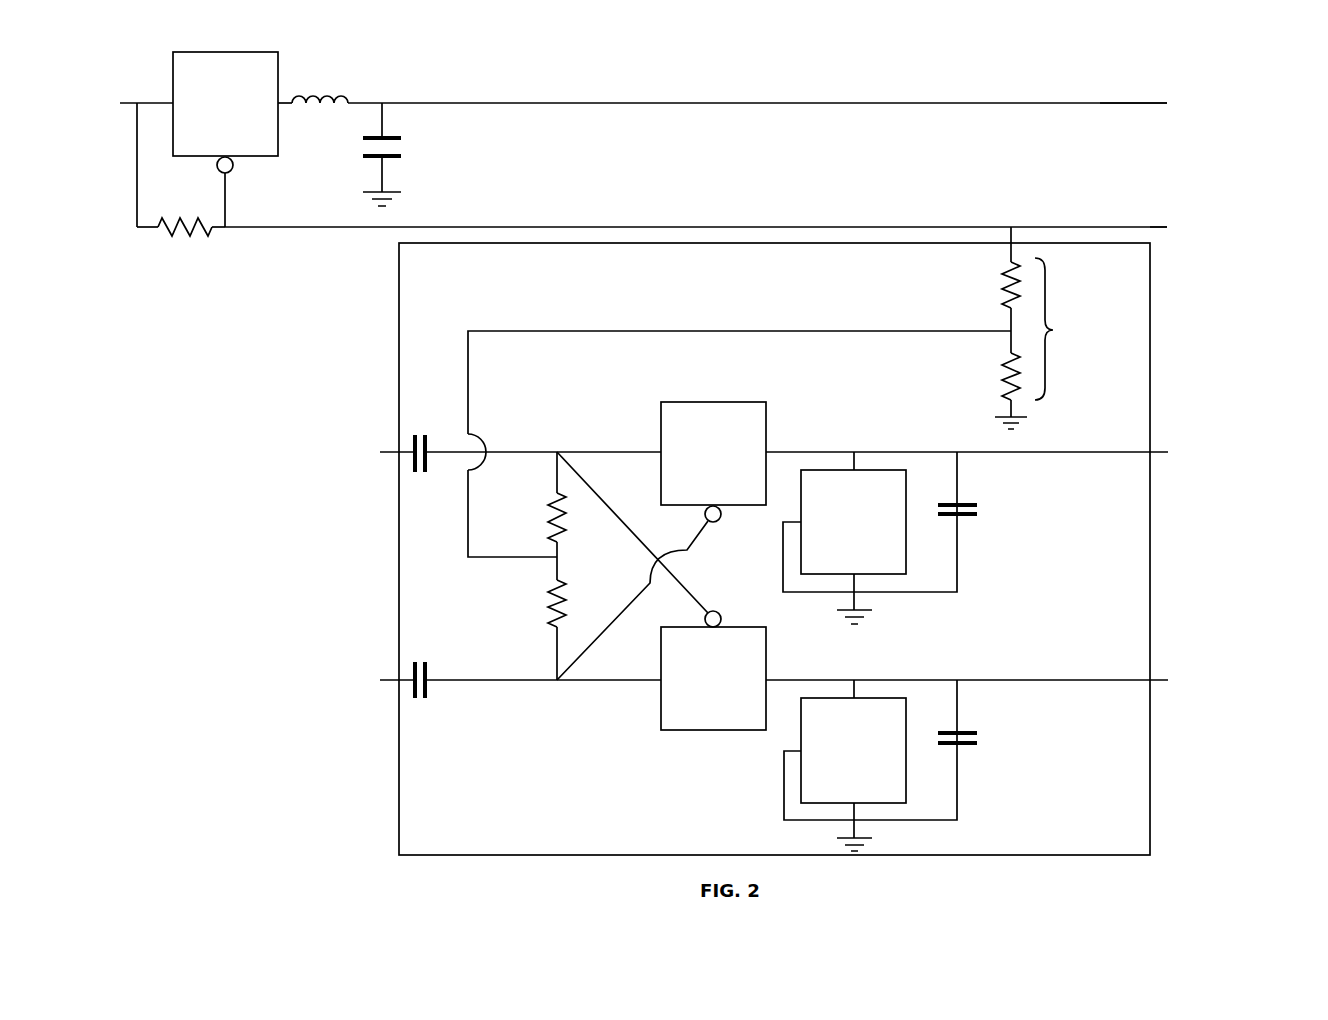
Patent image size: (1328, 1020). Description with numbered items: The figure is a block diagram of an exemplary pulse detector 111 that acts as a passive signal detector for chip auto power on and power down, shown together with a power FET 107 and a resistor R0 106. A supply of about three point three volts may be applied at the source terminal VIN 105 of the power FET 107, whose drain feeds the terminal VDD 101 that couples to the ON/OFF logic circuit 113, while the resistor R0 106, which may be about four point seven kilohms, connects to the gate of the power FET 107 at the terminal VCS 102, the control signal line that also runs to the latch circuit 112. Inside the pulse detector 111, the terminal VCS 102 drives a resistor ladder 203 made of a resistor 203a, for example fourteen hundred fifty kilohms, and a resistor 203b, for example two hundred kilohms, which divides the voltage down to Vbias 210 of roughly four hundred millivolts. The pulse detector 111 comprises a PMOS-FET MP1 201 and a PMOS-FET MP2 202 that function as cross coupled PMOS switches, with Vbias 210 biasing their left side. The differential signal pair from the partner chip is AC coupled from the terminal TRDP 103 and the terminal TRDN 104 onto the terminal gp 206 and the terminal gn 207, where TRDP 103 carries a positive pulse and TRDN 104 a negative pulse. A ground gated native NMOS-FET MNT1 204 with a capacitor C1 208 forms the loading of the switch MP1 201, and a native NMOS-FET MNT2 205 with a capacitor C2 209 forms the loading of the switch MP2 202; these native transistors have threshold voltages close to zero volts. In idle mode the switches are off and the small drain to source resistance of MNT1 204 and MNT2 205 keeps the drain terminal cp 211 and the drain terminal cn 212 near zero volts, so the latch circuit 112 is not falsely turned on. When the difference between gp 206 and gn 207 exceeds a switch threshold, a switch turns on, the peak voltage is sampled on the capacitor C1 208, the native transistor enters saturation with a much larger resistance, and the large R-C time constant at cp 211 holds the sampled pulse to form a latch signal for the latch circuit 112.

The terminal VDD 101 is at (382, 102).
The terminal VCS 102 is at (382, 230).
The terminal TRDP 103 is at (491, 452).
The terminal TRDN 104 is at (491, 680).
The source terminal VIN 105 is at (138, 101).
The resistor R0 106 is at (188, 233).
The power FET 107 is at (225, 112).
The pulse detector 111 is at (1203, 327).
The latch circuit 112 is at (1223, 443).
The ON/OFF logic circuit 113 is at (1193, 94).
The PMOS-FET MP1 201 is at (713, 462).
The PMOS-FET MP2 202 is at (713, 670).
The resistor ladder 203 is at (1082, 329).
The resistor 203a is at (1003, 278).
The resistor 203b is at (1003, 375).
The native NMOS-FET MNT1 204 is at (870, 538).
The native NMOS-FET MNT2 205 is at (870, 765).
The terminal gp 206 is at (557, 450).
The terminal gn 207 is at (557, 682).
The capacitor C1 208 is at (962, 518).
The capacitor C2 209 is at (960, 747).
The Vbias 210 is at (958, 330).
The drain terminal cp 211 is at (854, 452).
The drain terminal cn 212 is at (854, 680).